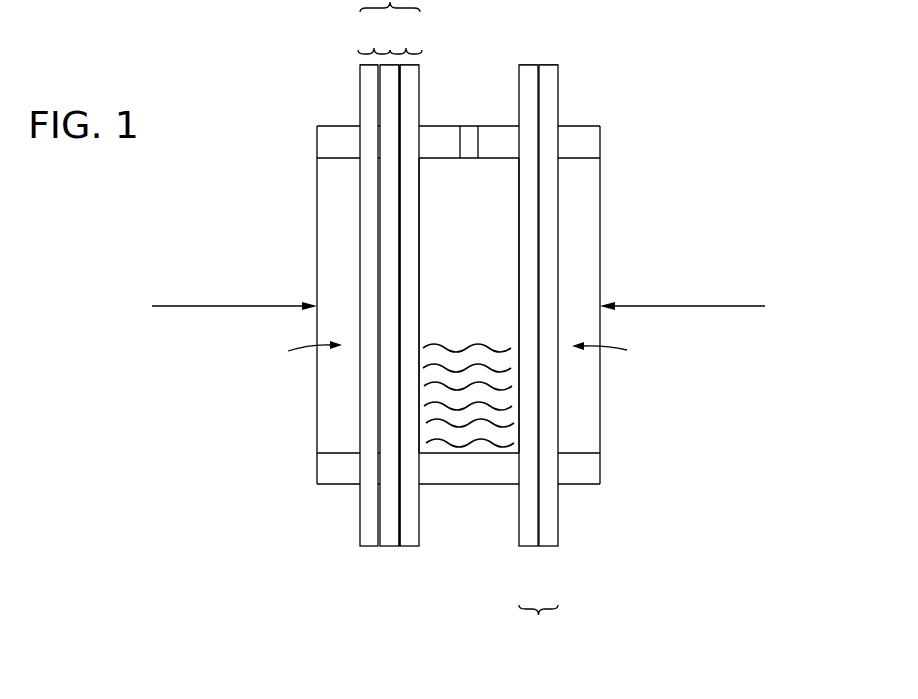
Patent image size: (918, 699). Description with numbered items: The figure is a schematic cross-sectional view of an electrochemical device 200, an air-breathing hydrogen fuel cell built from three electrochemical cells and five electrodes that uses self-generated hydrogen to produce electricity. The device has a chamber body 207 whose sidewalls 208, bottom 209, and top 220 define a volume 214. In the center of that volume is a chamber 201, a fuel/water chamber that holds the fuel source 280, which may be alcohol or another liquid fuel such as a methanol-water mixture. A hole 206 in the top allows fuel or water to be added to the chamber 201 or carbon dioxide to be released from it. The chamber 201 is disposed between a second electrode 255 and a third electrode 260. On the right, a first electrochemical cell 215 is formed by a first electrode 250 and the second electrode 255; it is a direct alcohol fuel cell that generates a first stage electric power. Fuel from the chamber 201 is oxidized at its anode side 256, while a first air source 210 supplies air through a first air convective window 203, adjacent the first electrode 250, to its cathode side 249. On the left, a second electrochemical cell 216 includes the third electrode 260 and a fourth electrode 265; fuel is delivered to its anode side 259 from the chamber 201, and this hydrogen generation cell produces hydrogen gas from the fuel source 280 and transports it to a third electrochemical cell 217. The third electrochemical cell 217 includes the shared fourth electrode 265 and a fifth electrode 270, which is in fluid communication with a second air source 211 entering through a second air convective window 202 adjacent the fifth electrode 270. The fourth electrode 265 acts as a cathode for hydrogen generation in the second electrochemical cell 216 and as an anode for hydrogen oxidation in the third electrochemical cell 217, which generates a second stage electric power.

The electrochemical device 200 is at (705, 54).
The chamber 201 is at (470, 430).
The second air convective window 202 is at (296, 352).
The first air convective window 203 is at (618, 352).
The hole 206 is at (472, 112).
The chamber body 207 is at (587, 126).
The sidewalls 208 is at (600, 178).
The bottom 209 is at (342, 485).
The first air source 210 is at (743, 305).
The second air source 211 is at (177, 305).
The volume 214 is at (484, 251).
The first electrochemical cell 215 is at (538, 626).
The second electrochemical cell 216 is at (406, 48).
The third electrochemical cell 217 is at (374, 48).
The top 220 is at (334, 126).
The cathode side 249 is at (560, 403).
The first electrode 250 is at (560, 515).
The second electrode 255 is at (519, 520).
The anode side 256 is at (519, 183).
The anode side 259 is at (422, 293).
The third electrode 260 is at (413, 547).
The fourth electrode 265 is at (387, 547).
The fifth electrode 270 is at (360, 530).
The fuel source 280 is at (500, 410).